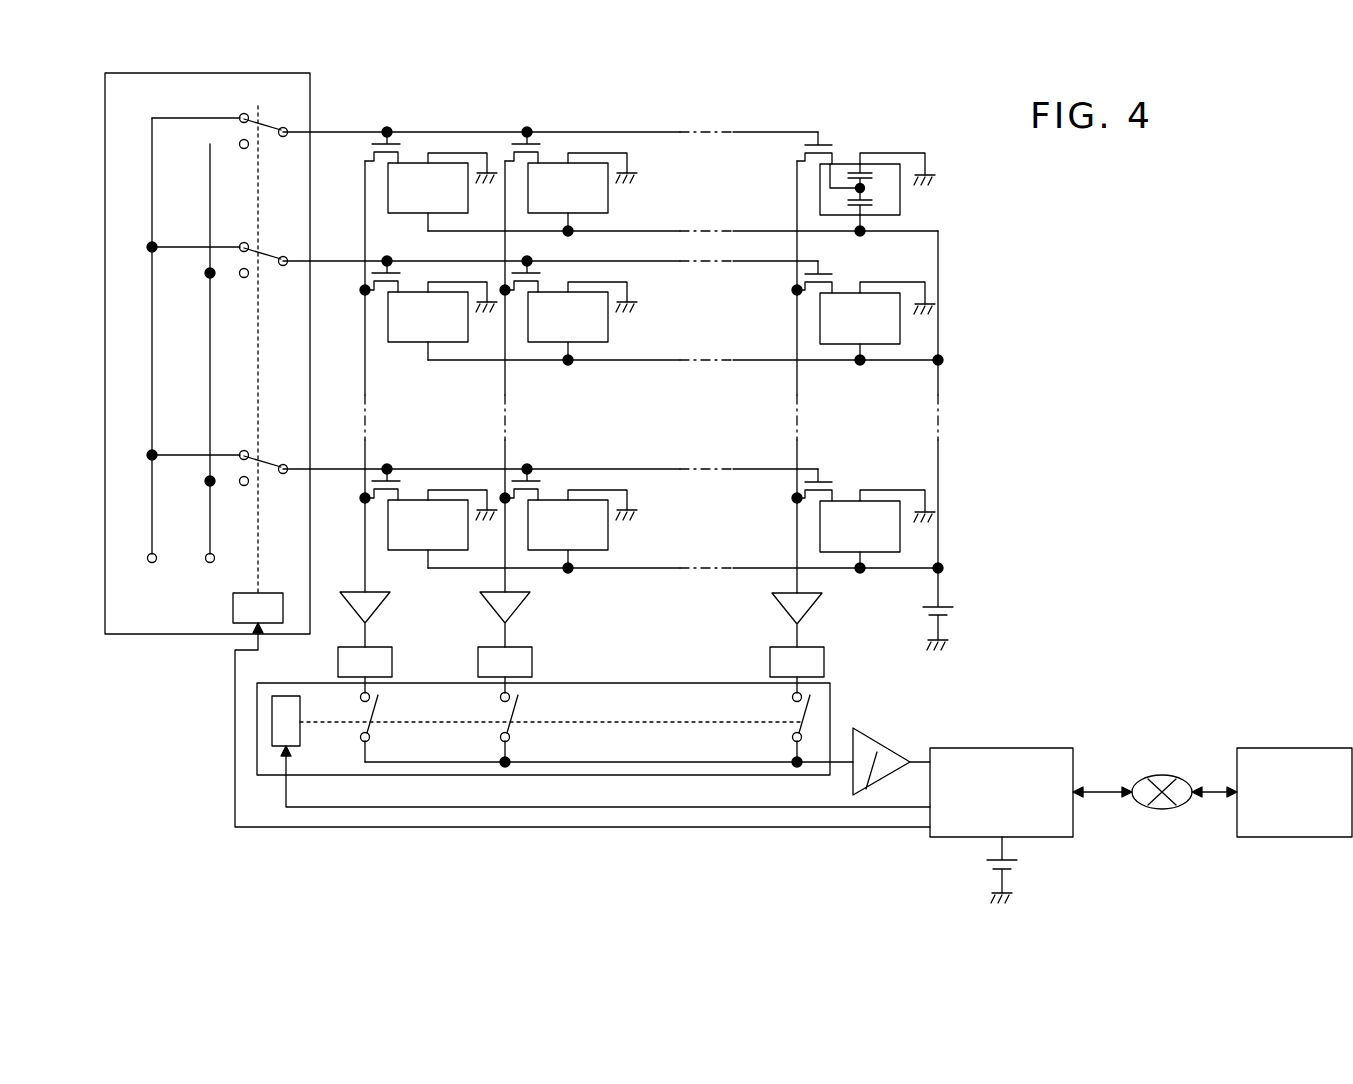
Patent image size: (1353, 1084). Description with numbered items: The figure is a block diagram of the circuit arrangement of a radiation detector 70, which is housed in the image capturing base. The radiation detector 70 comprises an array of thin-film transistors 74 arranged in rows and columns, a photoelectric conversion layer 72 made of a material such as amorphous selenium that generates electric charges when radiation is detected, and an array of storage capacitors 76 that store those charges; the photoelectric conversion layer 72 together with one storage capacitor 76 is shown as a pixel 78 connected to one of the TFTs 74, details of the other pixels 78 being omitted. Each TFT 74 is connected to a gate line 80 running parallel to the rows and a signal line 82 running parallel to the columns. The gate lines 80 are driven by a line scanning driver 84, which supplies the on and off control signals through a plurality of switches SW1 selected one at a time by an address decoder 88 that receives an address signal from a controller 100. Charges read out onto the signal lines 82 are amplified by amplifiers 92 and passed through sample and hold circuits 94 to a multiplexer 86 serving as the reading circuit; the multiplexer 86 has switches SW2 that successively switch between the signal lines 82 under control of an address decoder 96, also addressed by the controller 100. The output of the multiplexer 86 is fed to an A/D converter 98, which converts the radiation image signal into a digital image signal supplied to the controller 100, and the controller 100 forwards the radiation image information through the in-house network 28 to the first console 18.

The first console 18 is at (1331, 748).
The in-house network 28 is at (1162, 775).
The radiation detector 70 is at (618, 360).
The photoelectric conversion layer 72 is at (873, 203).
The thin-film transistor 74 is at (805, 150).
The storage capacitor 76 is at (876, 171).
The pixel 78 is at (655, 345).
The gate line 80 is at (770, 124).
The signal line 82 is at (795, 189).
The line scanning driver 84 is at (185, 353).
The multiplexer 86 is at (583, 707).
The address decoder 88 is at (229, 609).
The amplifier 92 is at (529, 612).
The sample and hold circuit 94 is at (532, 663).
The address decoder 96 is at (300, 735).
The A/D converter 98 is at (897, 752).
The controller 100 is at (1048, 748).
The switch SW1 is at (268, 118).
The switch SW2 is at (820, 702).